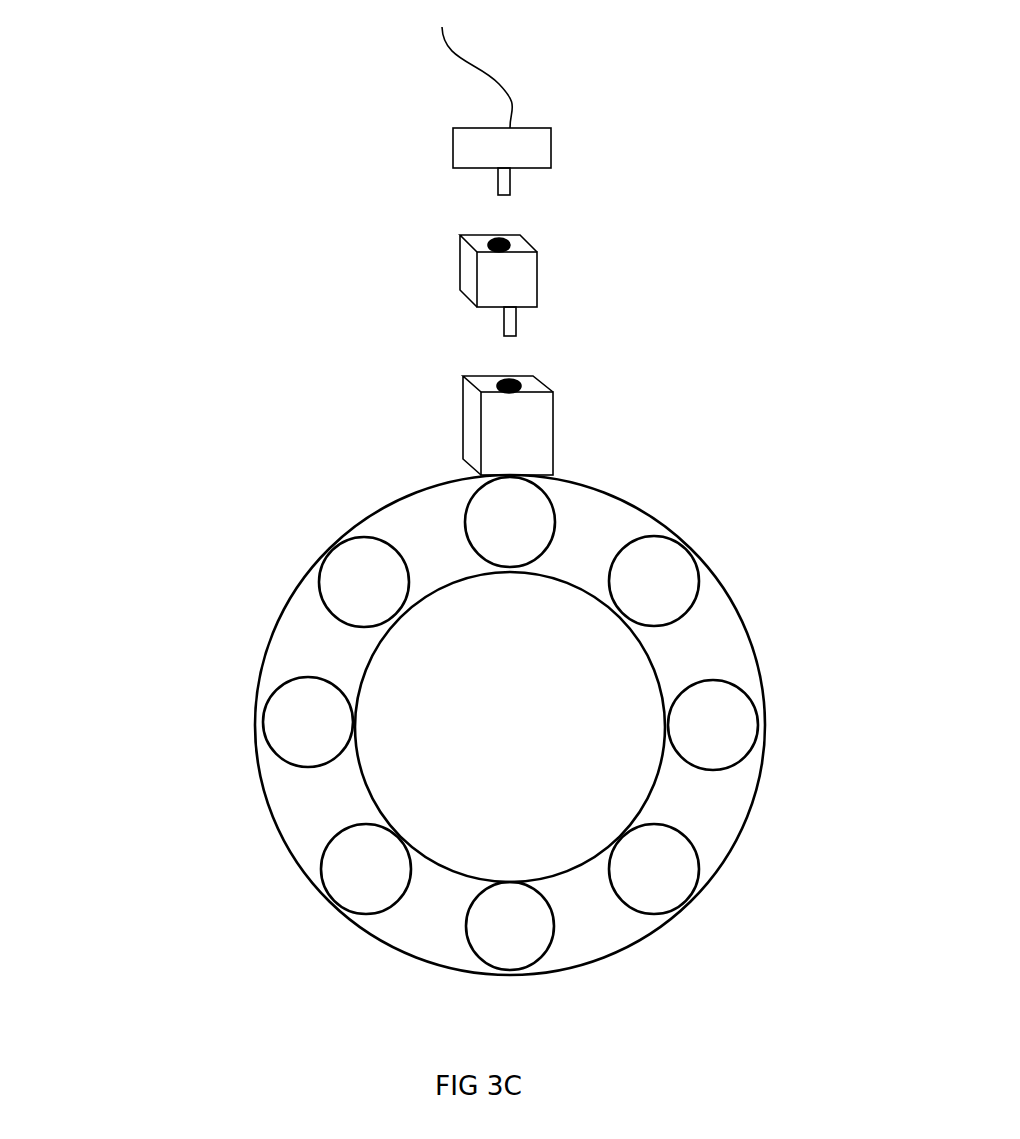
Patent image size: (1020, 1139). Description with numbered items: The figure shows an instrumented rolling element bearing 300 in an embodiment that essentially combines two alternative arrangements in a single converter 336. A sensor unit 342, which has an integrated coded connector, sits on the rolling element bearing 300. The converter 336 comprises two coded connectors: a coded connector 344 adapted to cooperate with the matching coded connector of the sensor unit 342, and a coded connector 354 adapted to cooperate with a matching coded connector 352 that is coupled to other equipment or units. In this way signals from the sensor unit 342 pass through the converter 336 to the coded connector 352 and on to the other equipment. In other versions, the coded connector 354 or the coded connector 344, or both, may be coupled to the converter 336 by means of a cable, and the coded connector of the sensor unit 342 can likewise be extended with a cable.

The rolling element bearing 300 is at (223, 808).
The sensor unit 342 is at (463, 439).
The converter 336 is at (478, 279).
The coded connector 354 is at (505, 237).
The coded connector 344 is at (508, 328).
The coded connector 352 is at (510, 153).